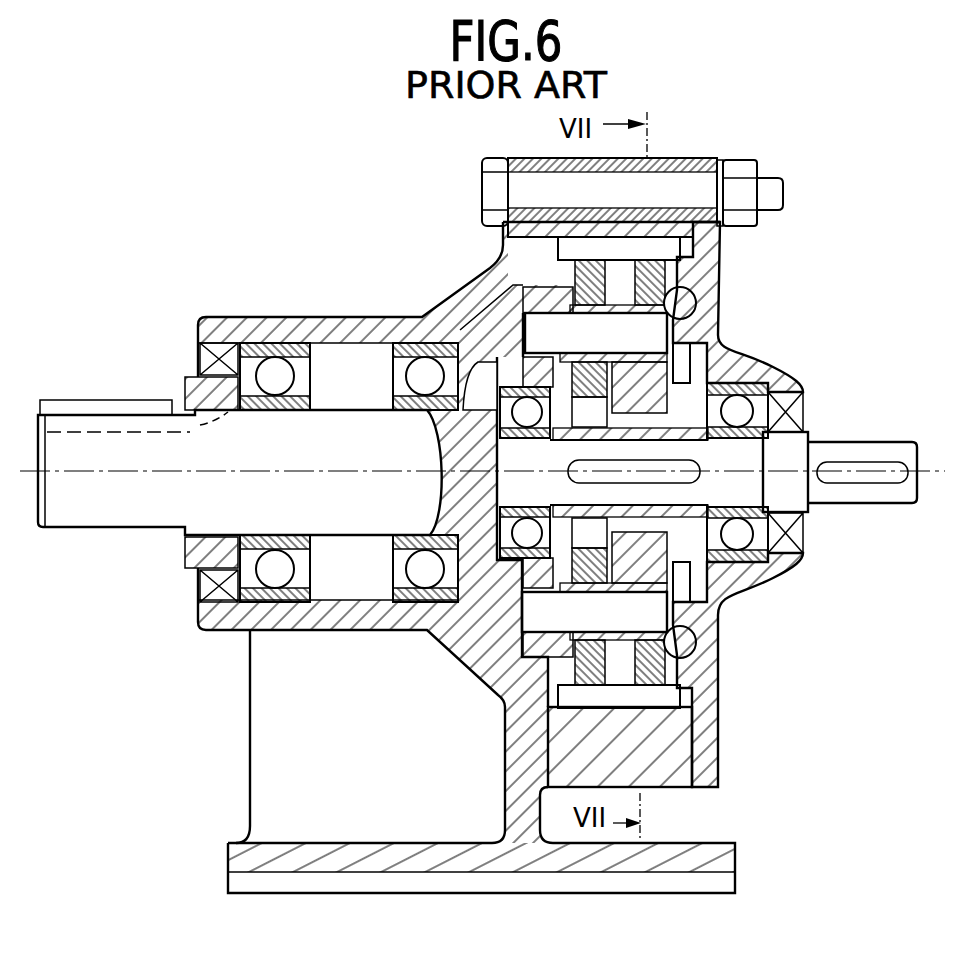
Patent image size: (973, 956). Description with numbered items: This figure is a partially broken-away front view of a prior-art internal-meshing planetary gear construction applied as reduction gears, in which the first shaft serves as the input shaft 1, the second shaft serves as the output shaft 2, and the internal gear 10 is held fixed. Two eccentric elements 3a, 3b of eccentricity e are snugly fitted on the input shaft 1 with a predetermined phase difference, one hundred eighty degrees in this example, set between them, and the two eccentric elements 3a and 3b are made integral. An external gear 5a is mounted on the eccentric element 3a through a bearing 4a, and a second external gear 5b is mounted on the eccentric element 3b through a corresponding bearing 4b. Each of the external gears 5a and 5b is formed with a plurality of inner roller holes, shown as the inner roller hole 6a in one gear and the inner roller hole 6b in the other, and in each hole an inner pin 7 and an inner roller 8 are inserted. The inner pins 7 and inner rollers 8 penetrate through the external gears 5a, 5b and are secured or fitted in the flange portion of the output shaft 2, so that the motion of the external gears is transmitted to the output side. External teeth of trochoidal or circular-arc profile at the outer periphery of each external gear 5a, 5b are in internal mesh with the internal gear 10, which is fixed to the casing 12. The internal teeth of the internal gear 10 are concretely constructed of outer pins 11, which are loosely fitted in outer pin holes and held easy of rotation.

The input shaft 1 is at (850, 493).
The output shaft 2 is at (64, 507).
The eccentric element 3a is at (722, 390).
The eccentric element 3b is at (520, 562).
The bearing 4a is at (655, 405).
The bearing 4b is at (585, 583).
The external gear 5a is at (665, 286).
The external gear 5b is at (588, 655).
The inner roller hole 6a is at (697, 303).
The inner roller hole 6b is at (505, 352).
The inner pin 7 is at (640, 620).
The inner roller 8 is at (713, 693).
The internal gear 10 is at (682, 163).
The outer pin 11 is at (568, 243).
The casing 12 is at (703, 258).